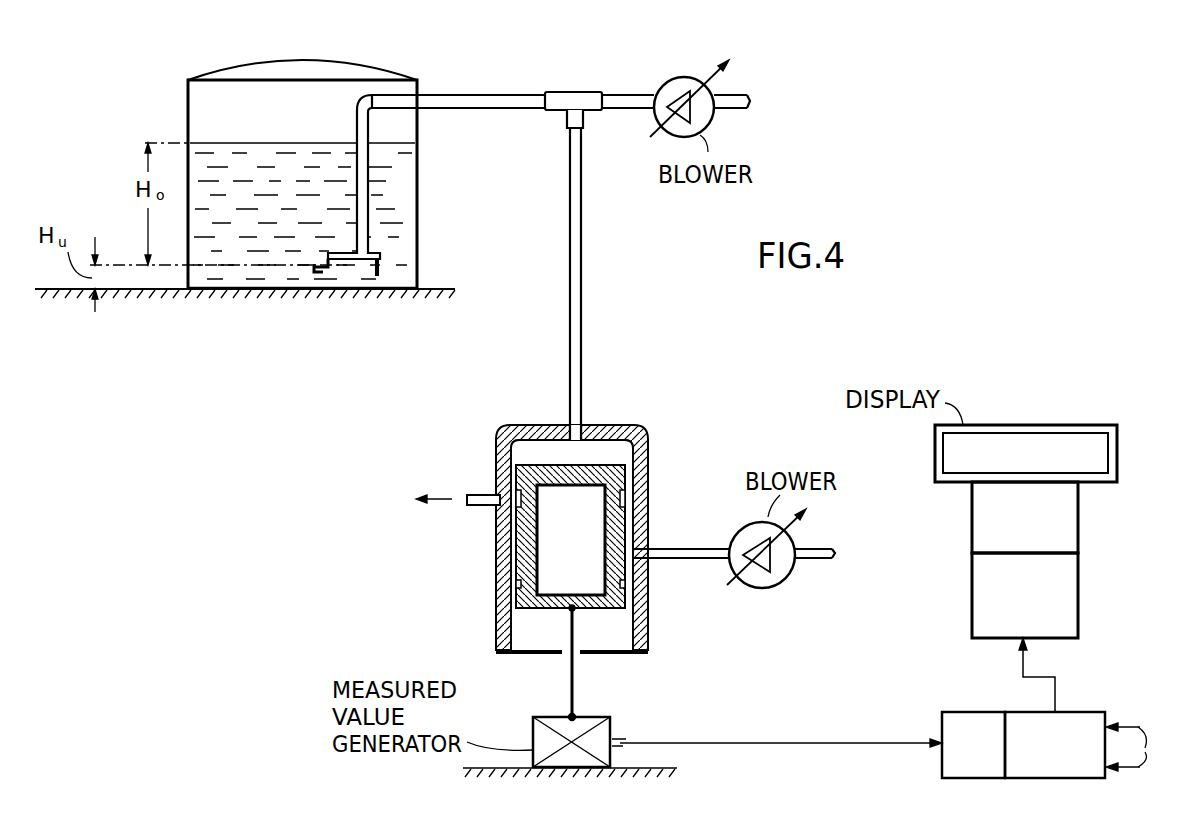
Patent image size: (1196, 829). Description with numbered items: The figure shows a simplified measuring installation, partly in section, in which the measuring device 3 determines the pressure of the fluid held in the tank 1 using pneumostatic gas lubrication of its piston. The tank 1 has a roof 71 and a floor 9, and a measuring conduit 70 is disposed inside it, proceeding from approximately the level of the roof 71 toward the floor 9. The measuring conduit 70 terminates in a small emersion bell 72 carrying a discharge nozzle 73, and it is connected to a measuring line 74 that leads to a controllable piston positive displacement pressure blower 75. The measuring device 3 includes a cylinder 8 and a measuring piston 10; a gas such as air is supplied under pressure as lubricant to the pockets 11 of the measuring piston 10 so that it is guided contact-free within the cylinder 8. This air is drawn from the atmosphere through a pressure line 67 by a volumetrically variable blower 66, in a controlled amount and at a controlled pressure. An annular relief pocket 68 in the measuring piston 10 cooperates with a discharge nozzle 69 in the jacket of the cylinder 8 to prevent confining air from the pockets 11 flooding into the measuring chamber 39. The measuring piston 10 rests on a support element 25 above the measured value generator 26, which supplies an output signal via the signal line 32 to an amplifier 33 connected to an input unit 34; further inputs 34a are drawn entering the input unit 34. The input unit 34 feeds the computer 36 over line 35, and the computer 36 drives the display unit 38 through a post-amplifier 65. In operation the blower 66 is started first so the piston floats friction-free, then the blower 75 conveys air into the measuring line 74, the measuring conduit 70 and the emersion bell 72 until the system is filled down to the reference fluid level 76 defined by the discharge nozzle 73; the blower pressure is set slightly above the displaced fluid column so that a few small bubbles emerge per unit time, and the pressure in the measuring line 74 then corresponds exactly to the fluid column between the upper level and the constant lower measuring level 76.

The tank 1 is at (197, 108).
The roof 71 is at (252, 66).
The floor 9 is at (275, 284).
The measuring conduit 70 is at (363, 208).
The emersion bell 72 is at (377, 260).
The discharge nozzle 73 is at (308, 268).
The reference fluid level 76 is at (360, 266).
The measuring line 74 is at (475, 96).
The piston positive displacement pressure blower 75 is at (660, 86).
The measuring device 3 is at (656, 471).
The measuring chamber 39 is at (533, 443).
The cylinder 8 is at (597, 435).
The annular relief pocket 68 is at (515, 495).
The pockets 11 is at (513, 572).
The measuring piston 10 is at (548, 542).
The discharge nozzle 69 is at (440, 499).
The pressure line 67 is at (665, 546).
The blower 66 is at (785, 585).
The support element 25 is at (574, 686).
The measured value generator 26 is at (533, 731).
The signal line 32 is at (745, 743).
The amplifier 33 is at (972, 712).
The input unit 34 is at (1073, 722).
The input lines 34a is at (1148, 747).
The line 35 is at (1040, 675).
The computer 36 is at (972, 600).
The post-amplifier 65 is at (1073, 525).
The display unit 38 is at (998, 440).